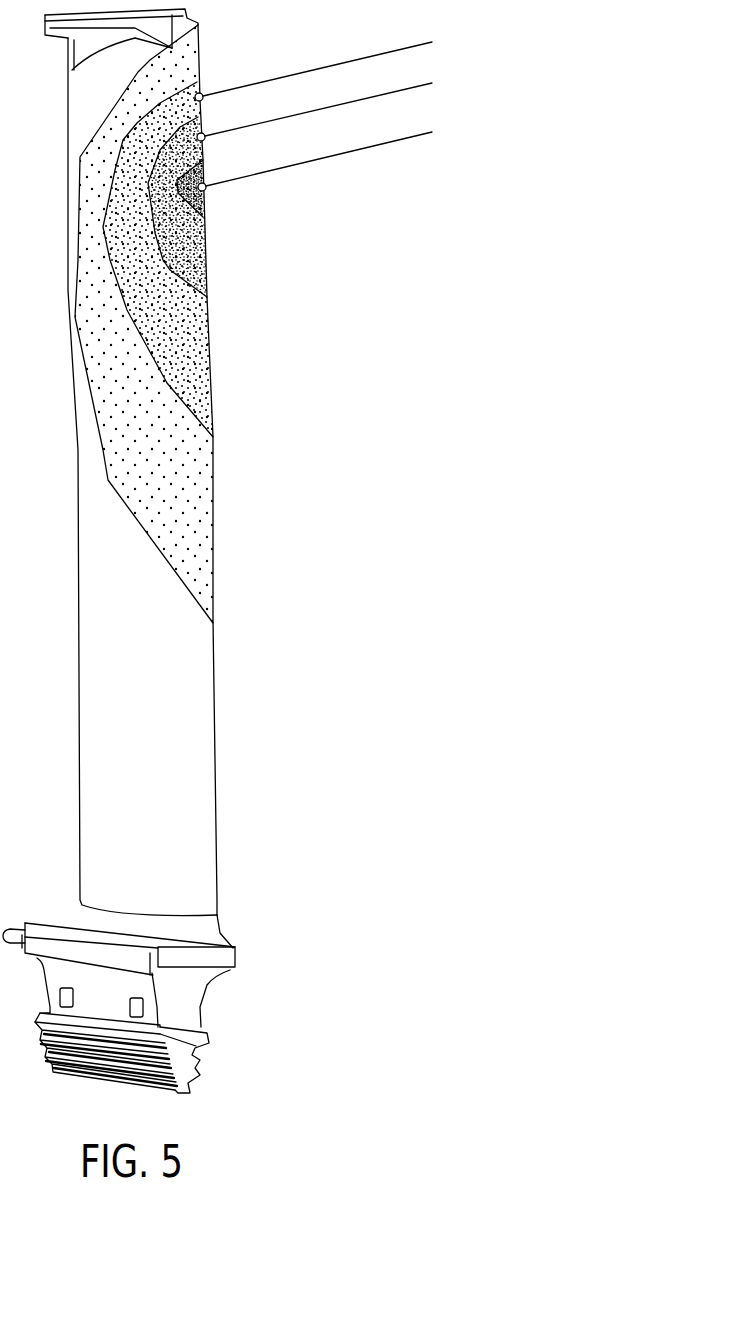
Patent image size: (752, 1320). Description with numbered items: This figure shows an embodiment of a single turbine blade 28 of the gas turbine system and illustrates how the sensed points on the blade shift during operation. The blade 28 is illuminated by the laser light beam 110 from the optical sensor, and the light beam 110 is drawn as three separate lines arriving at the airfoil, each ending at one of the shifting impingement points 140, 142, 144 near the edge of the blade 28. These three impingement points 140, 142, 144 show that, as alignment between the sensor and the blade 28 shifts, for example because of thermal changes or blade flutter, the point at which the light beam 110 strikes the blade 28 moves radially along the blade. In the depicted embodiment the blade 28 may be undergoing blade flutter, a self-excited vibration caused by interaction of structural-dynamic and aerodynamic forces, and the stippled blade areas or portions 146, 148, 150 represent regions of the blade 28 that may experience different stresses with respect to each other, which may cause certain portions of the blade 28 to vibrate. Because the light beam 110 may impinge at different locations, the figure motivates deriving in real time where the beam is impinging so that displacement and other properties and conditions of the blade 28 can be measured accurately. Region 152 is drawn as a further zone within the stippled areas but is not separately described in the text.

The blade 28 is at (155, 820).
The laser light beam 110 is at (375, 56).
The impingement point 140 is at (207, 181).
The impingement point 142 is at (206, 130).
The impingement point 144 is at (204, 90).
The blade area or portion 146 is at (176, 492).
The blade area or portion 148 is at (188, 357).
The blade area or portion 150 is at (190, 258).
The hot spot region 152 is at (192, 204).